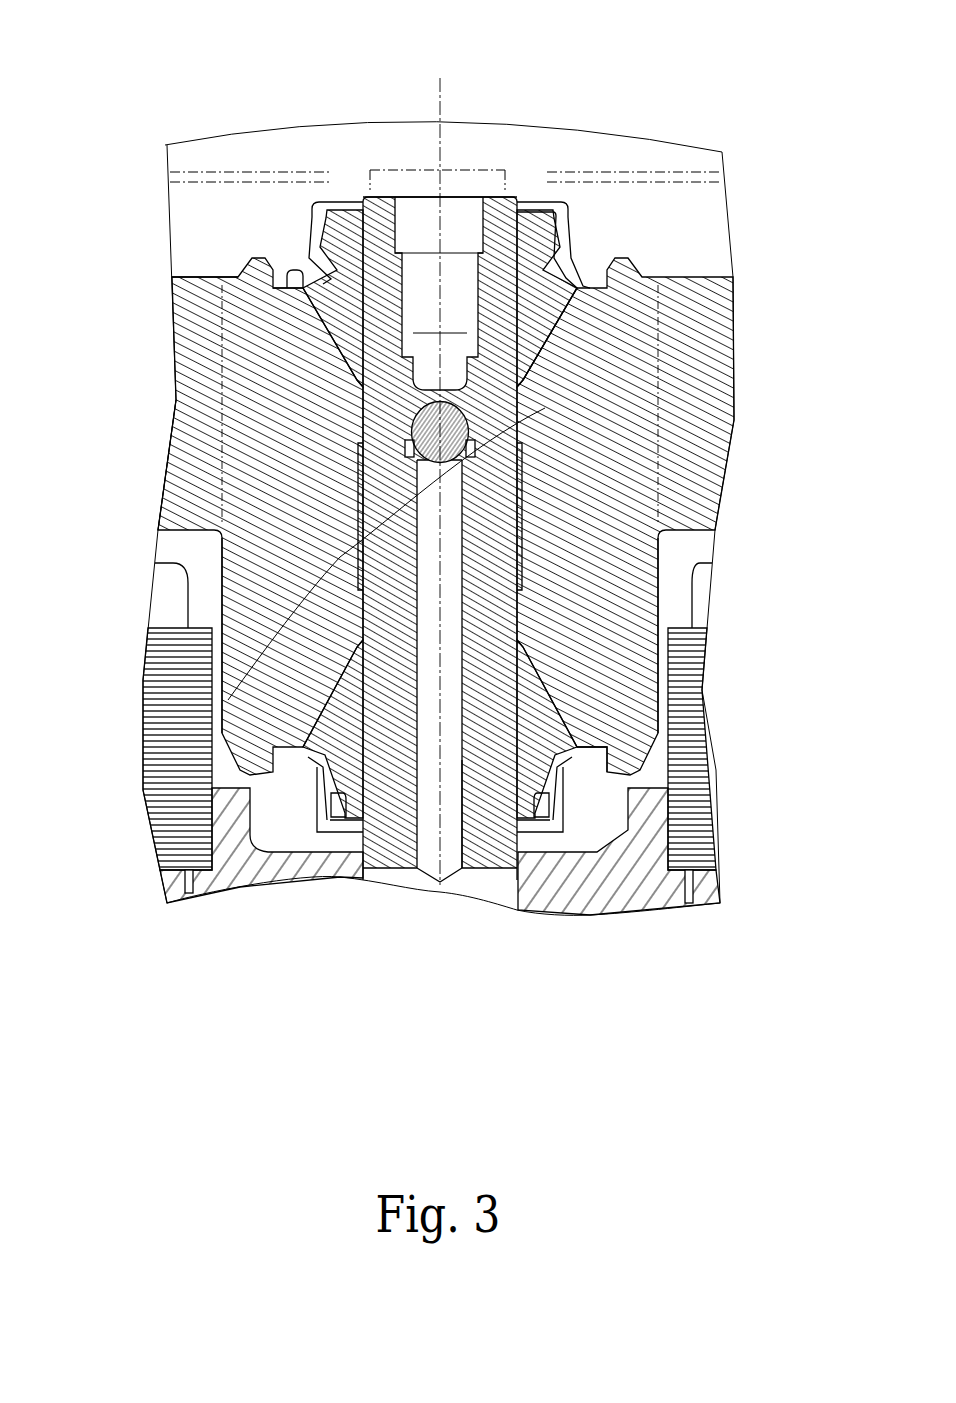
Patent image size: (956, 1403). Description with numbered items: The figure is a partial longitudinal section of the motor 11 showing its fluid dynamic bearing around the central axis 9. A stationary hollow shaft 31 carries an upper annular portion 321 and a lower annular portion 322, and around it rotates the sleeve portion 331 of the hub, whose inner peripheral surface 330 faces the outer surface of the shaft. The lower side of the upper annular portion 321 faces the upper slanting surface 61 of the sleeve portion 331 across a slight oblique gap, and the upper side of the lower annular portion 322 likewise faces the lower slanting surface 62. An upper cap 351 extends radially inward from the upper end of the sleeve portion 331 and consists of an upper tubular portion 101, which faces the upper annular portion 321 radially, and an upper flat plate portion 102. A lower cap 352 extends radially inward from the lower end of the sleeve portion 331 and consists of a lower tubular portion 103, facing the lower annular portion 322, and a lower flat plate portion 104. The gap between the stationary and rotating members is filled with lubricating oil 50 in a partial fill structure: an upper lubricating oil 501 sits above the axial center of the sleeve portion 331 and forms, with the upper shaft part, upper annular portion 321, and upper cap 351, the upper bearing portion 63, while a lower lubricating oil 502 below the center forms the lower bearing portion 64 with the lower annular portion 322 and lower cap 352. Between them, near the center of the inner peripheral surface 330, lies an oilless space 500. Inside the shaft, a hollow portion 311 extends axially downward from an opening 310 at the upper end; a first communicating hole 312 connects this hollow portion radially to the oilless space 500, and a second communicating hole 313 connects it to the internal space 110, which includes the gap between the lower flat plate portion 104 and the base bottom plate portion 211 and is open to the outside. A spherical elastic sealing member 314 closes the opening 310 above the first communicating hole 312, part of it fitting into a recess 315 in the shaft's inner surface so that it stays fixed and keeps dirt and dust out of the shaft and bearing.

The central axis 9 is at (440, 515).
The motor 11 is at (434, 515).
The hollow shaft 31 is at (434, 428).
The lubricating oil 50 is at (328, 248).
The upper slanting surface 61 is at (403, 447).
The lower slanting surface 62 is at (430, 744).
The upper bearing portion 63 is at (338, 228).
The lower bearing portion 64 is at (543, 802).
The upper tubular portion 101 is at (545, 410).
The upper flat plate portion 102 is at (542, 200).
The lower tubular portion 103 is at (300, 762).
The lower flat plate portion 104 is at (330, 822).
The internal space 110 is at (440, 905).
The base bottom plate portion 211 is at (580, 880).
The opening 310 is at (412, 193).
The hollow portion 311 is at (390, 872).
The first communicating hole 312 is at (490, 583).
The second communicating hole 313 is at (488, 846).
The sealing member 314 is at (363, 490).
The recess 315 is at (175, 397).
The upper annular portion 321 is at (296, 282).
The lower annular portion 322 is at (545, 768).
The inner peripheral surface 330 is at (177, 262).
The sleeve portion 331 is at (590, 598).
The upper cap 351 is at (582, 230).
The lower cap 352 is at (297, 893).
The oilless space 500 is at (305, 775).
The upper lubricating oil 501 is at (498, 202).
The lower lubricating oil 502 is at (603, 797).